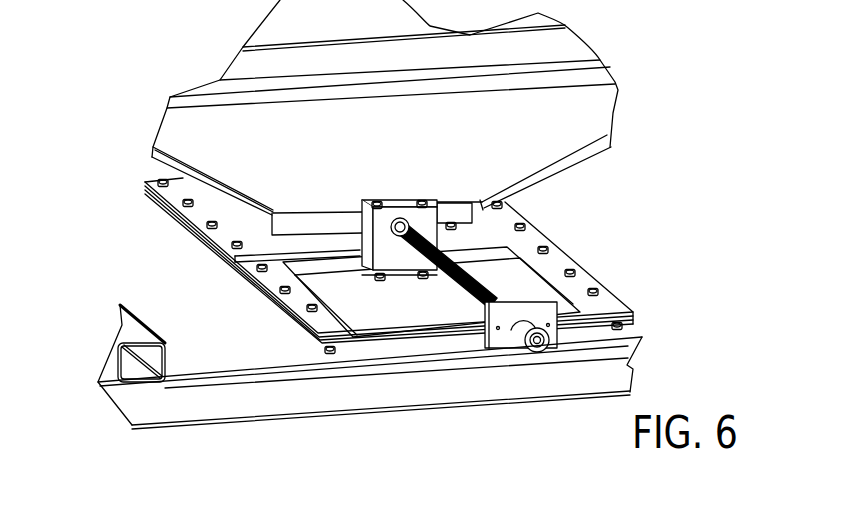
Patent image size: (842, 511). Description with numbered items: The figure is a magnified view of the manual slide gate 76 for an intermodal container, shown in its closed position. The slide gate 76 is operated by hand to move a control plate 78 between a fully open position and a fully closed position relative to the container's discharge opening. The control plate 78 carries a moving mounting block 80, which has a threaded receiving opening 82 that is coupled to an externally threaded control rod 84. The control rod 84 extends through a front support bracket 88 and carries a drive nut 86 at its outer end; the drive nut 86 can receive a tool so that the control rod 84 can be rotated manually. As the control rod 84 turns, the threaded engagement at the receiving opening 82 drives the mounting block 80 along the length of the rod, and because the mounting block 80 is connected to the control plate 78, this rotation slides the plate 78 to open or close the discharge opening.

The slide gate 76 is at (390, 298).
The control plate 78 is at (473, 257).
The moving mounting block 80 is at (372, 228).
The threaded receiving opening 82 is at (403, 220).
The control rod 84 is at (492, 275).
The drive nut 86 is at (520, 332).
The front support bracket 88 is at (584, 364).